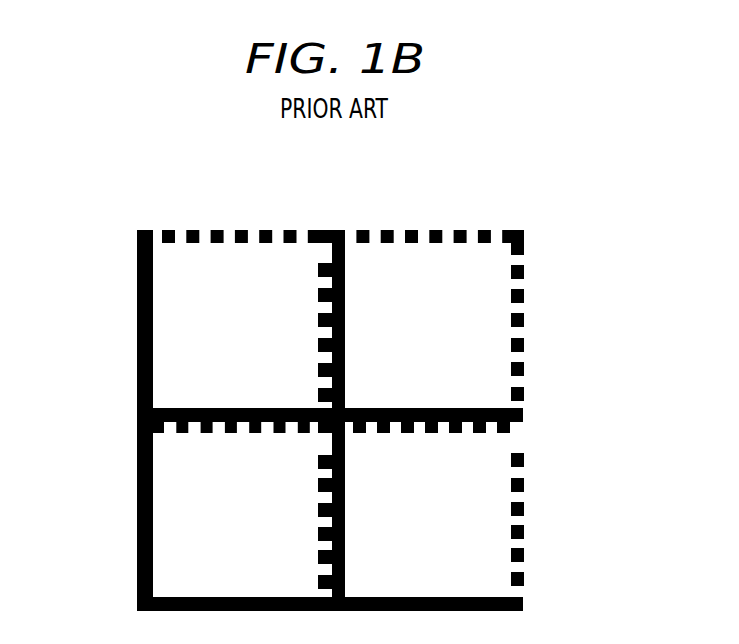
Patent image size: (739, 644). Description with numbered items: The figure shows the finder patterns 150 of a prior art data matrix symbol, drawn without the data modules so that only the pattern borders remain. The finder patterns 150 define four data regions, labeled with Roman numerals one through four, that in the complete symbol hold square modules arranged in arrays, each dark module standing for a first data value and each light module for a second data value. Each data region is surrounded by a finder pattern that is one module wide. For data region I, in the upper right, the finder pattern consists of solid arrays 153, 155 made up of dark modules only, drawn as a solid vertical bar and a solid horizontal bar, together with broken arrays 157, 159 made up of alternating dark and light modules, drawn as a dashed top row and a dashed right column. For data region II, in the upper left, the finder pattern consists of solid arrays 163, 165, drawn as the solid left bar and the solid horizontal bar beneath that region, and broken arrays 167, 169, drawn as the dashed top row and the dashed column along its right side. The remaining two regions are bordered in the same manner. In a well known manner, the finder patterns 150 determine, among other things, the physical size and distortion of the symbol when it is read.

The finder patterns 150 is at (354, 154).
The solid array 153 is at (343, 383).
The solid array 155 is at (448, 407).
The broken array 157 is at (458, 230).
The broken array 159 is at (525, 323).
The solid array 163 is at (137, 330).
The solid array 165 is at (170, 408).
The broken array 167 is at (193, 232).
The broken array 169 is at (318, 342).